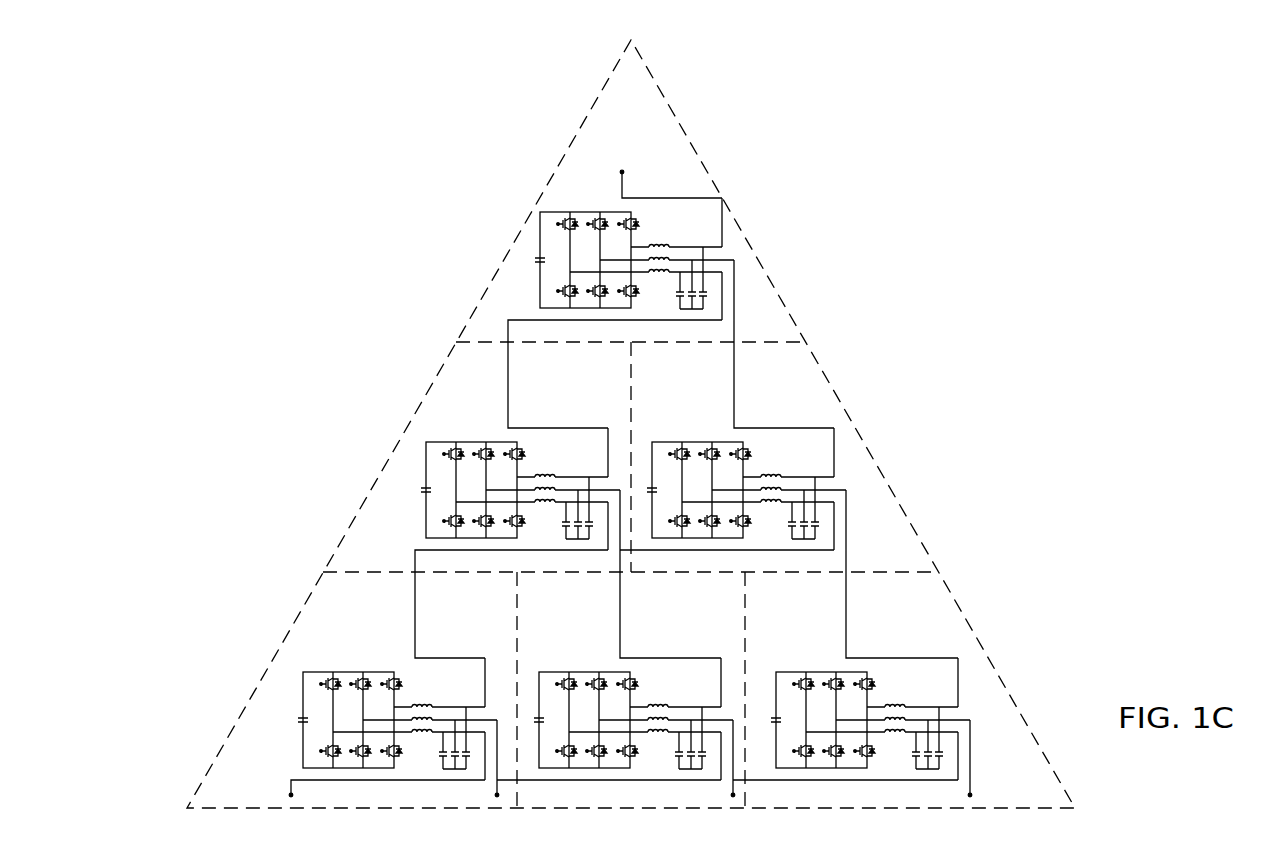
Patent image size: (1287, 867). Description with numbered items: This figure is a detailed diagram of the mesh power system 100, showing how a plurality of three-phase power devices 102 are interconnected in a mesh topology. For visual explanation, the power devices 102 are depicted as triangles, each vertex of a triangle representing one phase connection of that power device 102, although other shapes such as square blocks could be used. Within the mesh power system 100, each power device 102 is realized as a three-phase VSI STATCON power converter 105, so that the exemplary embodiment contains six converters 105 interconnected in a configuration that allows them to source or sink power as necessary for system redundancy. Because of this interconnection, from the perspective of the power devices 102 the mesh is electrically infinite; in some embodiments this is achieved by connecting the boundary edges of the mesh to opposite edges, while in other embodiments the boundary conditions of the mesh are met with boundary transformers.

The mesh power system 100 is at (984, 169).
The three-phase power device 102 is at (630, 445).
The three-phase VSI STATCON power converter 105 is at (577, 189).